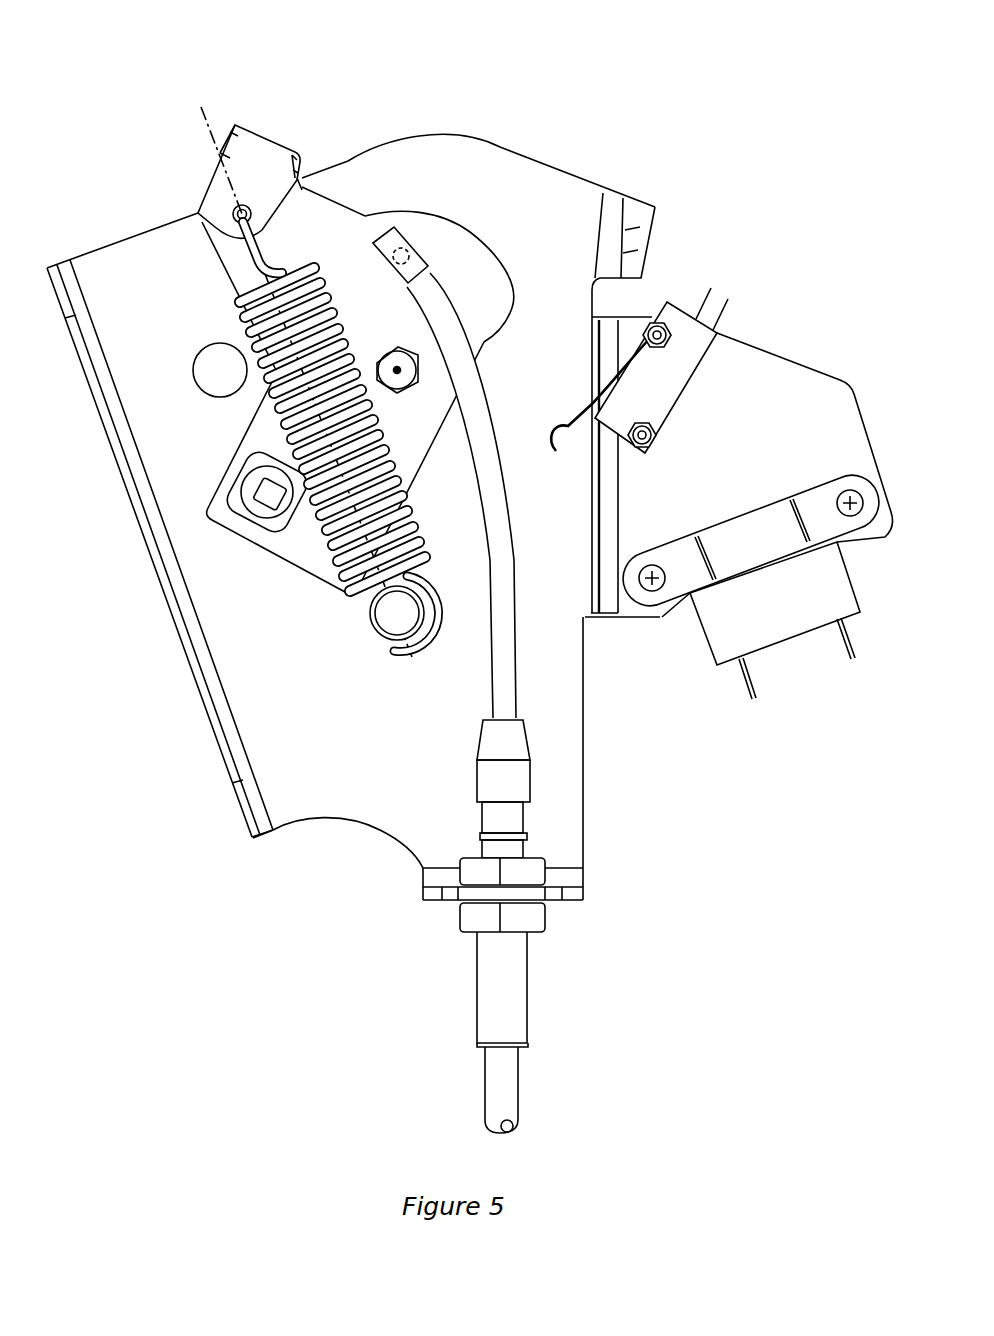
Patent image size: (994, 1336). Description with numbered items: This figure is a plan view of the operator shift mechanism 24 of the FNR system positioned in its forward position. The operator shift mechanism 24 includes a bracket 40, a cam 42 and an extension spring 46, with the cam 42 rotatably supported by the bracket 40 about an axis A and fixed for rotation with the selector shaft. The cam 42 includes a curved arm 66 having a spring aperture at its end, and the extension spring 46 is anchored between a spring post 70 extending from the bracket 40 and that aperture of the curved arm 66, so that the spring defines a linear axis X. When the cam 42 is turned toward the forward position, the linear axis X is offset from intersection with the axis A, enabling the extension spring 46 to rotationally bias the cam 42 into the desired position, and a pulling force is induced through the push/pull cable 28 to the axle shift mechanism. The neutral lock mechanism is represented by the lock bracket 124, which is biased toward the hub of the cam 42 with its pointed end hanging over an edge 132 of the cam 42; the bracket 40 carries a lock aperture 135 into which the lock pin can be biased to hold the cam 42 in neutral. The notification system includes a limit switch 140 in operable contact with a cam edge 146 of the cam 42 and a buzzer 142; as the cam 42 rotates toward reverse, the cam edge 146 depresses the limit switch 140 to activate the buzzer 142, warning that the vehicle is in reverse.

The operator shift mechanism 24 is at (652, 90).
The push/pull cable 28 is at (523, 788).
The bracket 40 is at (107, 265).
The cam 42 is at (347, 223).
The extension spring 46 is at (247, 313).
The curved arm 66 is at (270, 160).
The spring post 70 is at (383, 622).
The lock bracket 124 is at (293, 533).
The edge 132 is at (217, 522).
The lock aperture 135 is at (202, 385).
The limit switch 140 is at (700, 353).
The buzzer 142 is at (780, 630).
The cam edge 146 is at (482, 233).
The axis A is at (397, 370).
The linear axis X is at (315, 402).